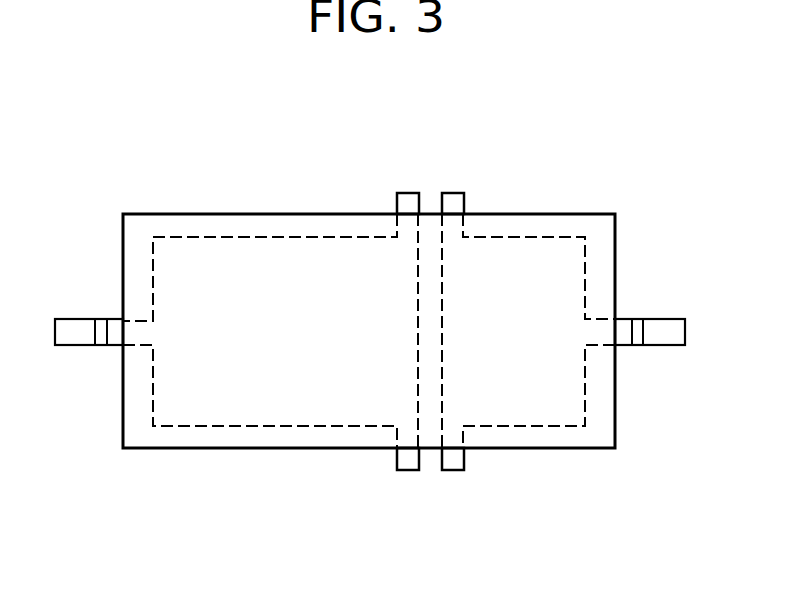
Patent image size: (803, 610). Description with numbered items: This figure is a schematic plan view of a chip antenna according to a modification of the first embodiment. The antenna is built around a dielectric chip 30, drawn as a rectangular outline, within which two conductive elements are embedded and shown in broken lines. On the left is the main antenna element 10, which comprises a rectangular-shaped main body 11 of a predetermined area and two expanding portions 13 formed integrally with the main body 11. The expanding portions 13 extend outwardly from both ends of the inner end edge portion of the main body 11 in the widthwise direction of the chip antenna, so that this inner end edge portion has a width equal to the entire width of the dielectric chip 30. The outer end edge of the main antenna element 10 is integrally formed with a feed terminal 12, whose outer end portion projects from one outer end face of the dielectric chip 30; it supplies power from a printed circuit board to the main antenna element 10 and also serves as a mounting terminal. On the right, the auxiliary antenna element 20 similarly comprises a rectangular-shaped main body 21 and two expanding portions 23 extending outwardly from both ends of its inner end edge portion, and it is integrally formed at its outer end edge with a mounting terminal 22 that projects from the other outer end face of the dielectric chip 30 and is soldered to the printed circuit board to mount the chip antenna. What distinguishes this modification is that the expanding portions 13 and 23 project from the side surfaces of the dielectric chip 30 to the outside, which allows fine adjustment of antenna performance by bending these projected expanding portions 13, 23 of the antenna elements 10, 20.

The main antenna element 10 is at (271, 341).
The main body 11 is at (267, 397).
The feed terminal 12 is at (68, 330).
The expanding portions 13 is at (407, 200).
The auxiliary antenna element 20 is at (528, 341).
The main body 21 is at (548, 397).
The mounting terminal 22 is at (665, 325).
The expanding portions 23 is at (452, 200).
The dielectric chip 30 is at (545, 222).